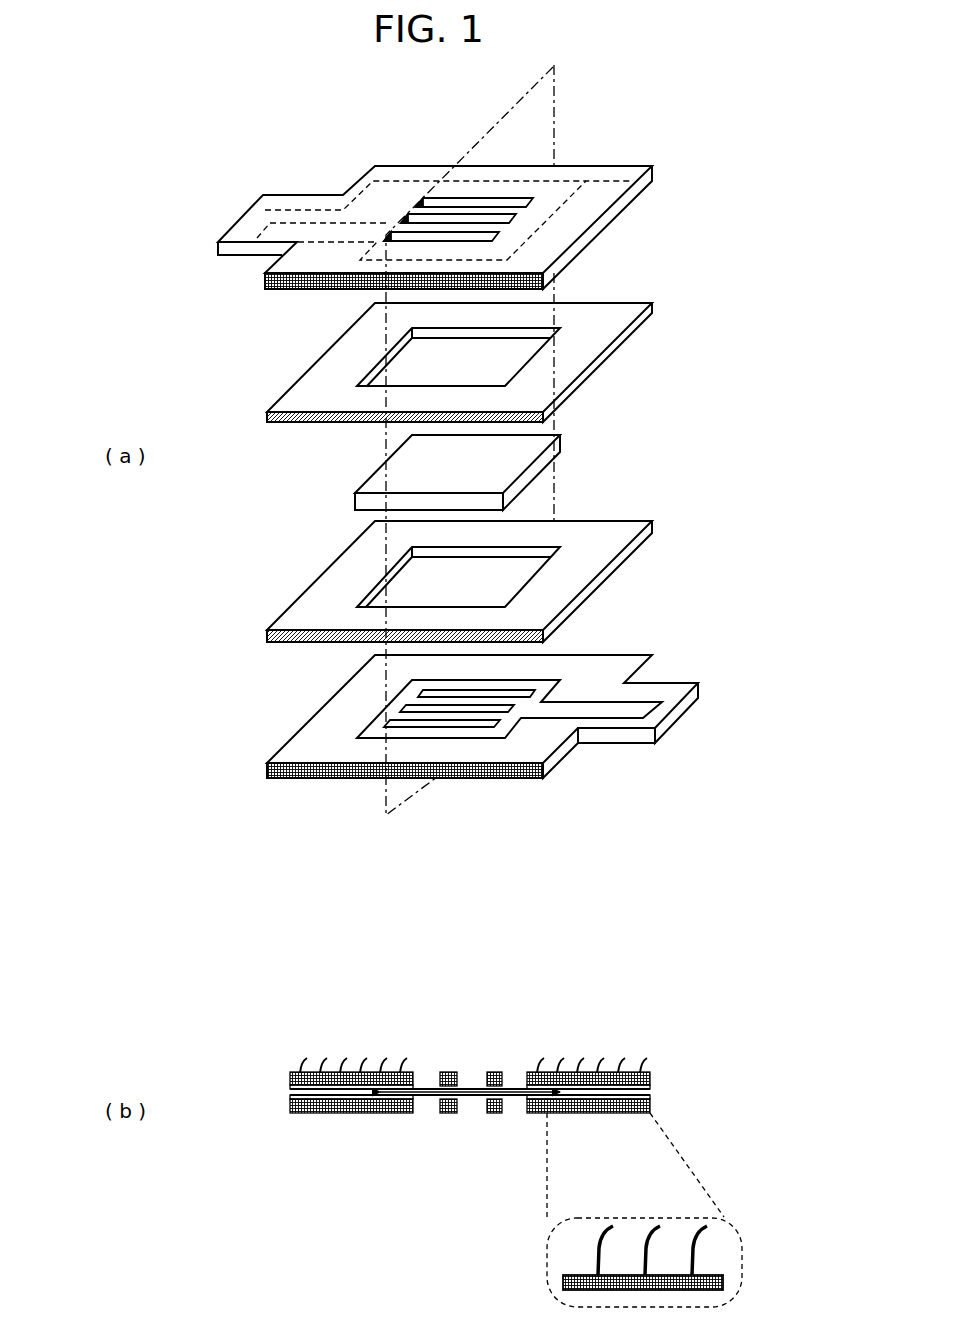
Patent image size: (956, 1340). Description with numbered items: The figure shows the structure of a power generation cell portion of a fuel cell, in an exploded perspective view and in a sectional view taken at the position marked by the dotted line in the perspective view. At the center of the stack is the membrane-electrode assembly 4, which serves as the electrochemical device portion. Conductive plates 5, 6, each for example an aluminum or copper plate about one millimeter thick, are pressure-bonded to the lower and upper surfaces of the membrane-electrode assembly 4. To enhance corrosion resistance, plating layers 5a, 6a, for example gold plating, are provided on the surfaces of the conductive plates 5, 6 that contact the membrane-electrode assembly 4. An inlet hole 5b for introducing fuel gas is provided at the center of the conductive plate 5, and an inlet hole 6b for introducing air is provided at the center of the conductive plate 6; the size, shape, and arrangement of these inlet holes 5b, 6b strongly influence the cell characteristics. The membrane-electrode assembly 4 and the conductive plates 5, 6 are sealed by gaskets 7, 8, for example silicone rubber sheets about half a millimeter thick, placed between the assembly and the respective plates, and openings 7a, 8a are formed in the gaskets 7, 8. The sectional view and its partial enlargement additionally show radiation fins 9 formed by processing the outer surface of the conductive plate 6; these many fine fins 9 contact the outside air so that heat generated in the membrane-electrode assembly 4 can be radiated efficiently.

The membrane-electrode assembly 4 is at (562, 444).
The conductive plate 5 is at (614, 741).
The plating layer 5a is at (638, 710).
The inlet hole 5b is at (463, 730).
The conductive plate 6 is at (600, 172).
The plating layer 6a is at (527, 220).
The inlet hole 6b is at (483, 197).
The gasket 7 is at (605, 552).
The opening 7a is at (509, 574).
The gasket 8 is at (602, 318).
The opening 8a is at (511, 357).
The radiation fins 9 is at (412, 1055).